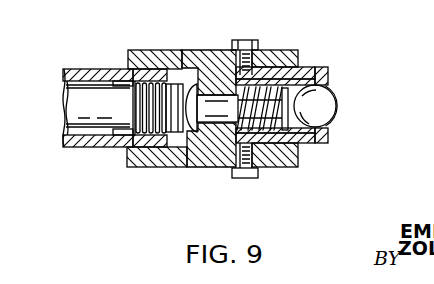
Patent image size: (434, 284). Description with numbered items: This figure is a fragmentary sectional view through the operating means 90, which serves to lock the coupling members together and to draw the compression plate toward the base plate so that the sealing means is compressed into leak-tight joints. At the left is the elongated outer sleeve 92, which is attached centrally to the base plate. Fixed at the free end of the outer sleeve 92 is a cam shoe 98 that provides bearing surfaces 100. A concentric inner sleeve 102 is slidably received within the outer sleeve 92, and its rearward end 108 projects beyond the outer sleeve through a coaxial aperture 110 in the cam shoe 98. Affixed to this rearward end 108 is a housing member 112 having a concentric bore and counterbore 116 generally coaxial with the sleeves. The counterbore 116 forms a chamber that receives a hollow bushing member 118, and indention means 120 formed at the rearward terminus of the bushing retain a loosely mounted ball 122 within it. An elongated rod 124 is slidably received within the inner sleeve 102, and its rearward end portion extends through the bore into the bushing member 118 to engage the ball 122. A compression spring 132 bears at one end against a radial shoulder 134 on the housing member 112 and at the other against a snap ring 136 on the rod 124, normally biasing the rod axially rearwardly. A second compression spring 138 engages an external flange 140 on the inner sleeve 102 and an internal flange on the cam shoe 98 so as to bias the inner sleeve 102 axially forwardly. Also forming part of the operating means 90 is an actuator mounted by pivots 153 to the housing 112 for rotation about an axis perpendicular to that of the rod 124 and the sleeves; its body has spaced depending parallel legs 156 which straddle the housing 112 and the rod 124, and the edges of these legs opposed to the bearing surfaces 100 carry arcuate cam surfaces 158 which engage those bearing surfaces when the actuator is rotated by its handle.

The operating means 90 is at (98, 201).
The outer sleeve 92 is at (71, 68).
The cam shoe 98 is at (139, 46).
The bearing surfaces 100 is at (190, 56).
The inner sleeve 102 is at (82, 148).
The rearward end of the inner sleeve 108 is at (116, 98).
The coaxial aperture 110 is at (143, 140).
The housing member 112 is at (322, 61).
The counterbore 116 is at (288, 152).
The hollow bushing member 118 is at (303, 144).
The indention means 120 is at (330, 138).
The ball 122 is at (335, 103).
The rod 124 is at (213, 123).
The compression spring 132 is at (298, 51).
The radial shoulder 134 is at (232, 80).
The snap ring 136 is at (331, 121).
The compression spring 138 is at (127, 147).
The external flange 140 is at (120, 148).
The pivots 153 is at (245, 40).
The legs 156 is at (273, 90).
The arcuate cam surfaces 158 is at (182, 163).